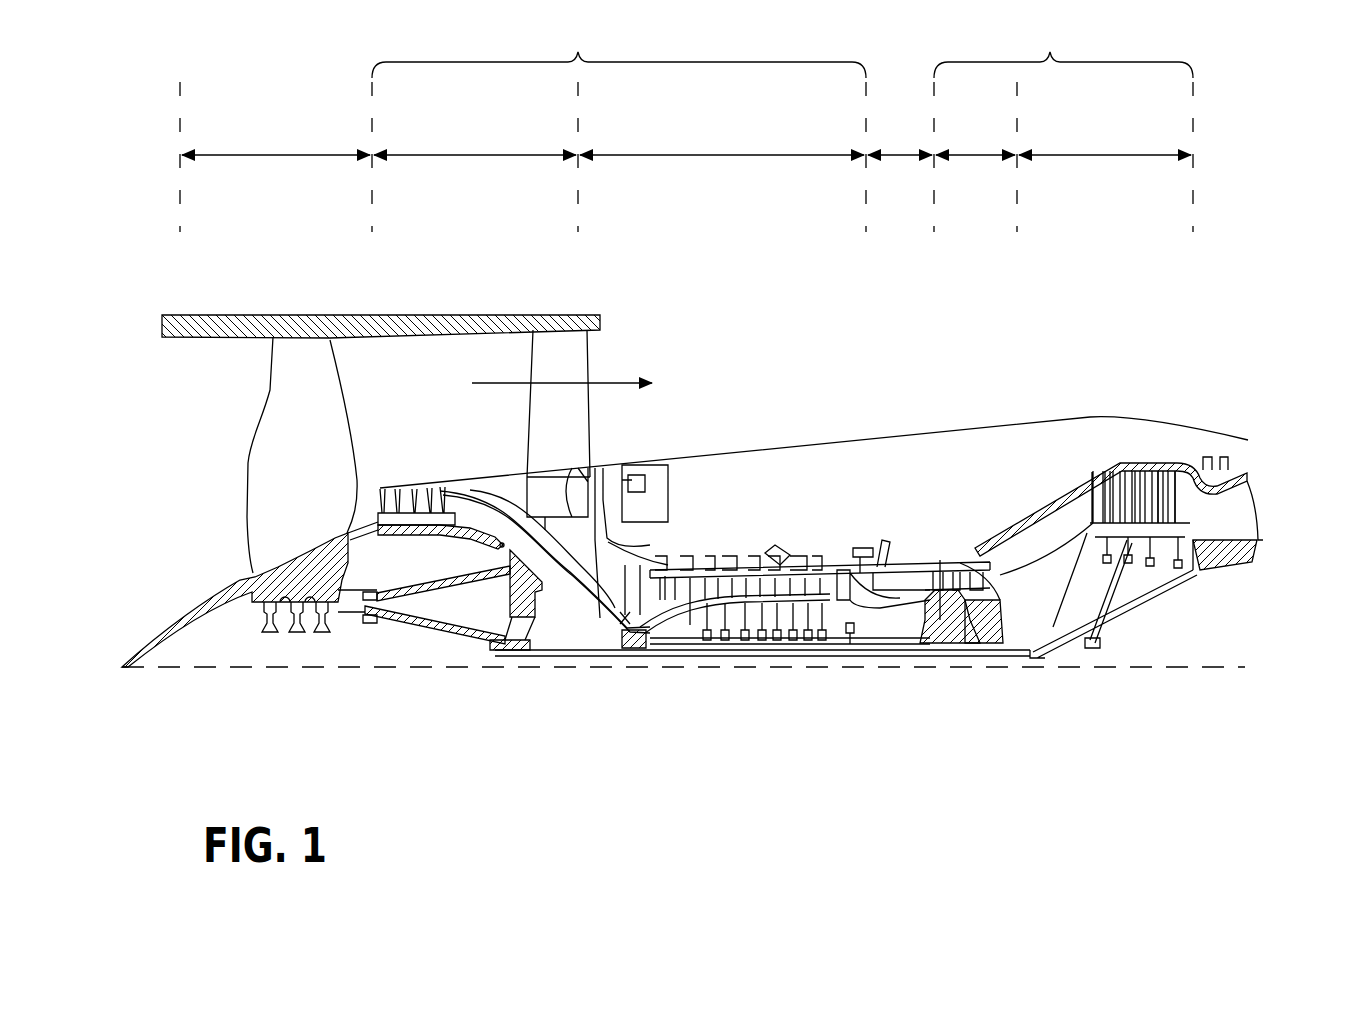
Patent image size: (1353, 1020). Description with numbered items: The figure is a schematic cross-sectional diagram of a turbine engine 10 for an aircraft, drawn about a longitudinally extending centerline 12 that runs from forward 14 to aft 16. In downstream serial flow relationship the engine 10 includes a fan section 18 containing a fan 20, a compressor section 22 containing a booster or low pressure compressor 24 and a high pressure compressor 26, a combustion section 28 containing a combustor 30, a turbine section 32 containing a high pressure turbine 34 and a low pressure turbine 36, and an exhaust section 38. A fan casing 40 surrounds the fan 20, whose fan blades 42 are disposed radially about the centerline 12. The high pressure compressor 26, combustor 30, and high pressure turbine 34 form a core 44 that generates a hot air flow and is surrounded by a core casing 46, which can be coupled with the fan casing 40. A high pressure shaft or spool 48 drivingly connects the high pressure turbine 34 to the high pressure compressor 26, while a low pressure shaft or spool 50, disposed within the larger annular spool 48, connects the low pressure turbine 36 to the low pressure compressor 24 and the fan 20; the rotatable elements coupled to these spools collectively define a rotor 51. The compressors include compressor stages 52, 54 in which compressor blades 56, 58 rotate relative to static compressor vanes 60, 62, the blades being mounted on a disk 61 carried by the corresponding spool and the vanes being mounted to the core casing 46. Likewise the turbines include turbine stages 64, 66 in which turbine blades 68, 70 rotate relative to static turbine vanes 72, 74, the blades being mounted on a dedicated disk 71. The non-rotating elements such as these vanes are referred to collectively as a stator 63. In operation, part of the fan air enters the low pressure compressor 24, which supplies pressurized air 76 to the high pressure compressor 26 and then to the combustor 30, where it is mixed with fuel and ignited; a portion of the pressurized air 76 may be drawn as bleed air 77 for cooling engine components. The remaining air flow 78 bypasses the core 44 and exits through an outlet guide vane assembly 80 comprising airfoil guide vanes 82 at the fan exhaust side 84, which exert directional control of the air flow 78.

The turbine engine 10 is at (890, 308).
The centerline 12 is at (273, 668).
The forward 14 is at (128, 444).
The aft 16 is at (1278, 528).
The fan section 18 is at (276, 141).
The fan 20 is at (214, 516).
The compressor section 22 is at (619, 51).
The low pressure compressor 24 is at (475, 141).
The high pressure compressor 26 is at (722, 141).
The combustion section 28 is at (900, 137).
The combustor 30 is at (900, 580).
The turbine section 32 is at (1063, 51).
The high pressure turbine 34 is at (975, 141).
The low pressure turbine 36 is at (1105, 141).
The exhaust section 38 is at (1270, 482).
The fan casing 40 is at (408, 315).
The fan blades 42 is at (328, 392).
The core 44 is at (845, 480).
The core casing 46 is at (1070, 488).
The HP shaft or spool 48 is at (877, 650).
The LP shaft or spool 50 is at (512, 657).
The rotor 51 is at (758, 660).
The compressor stage 52 is at (370, 430).
The compressor stage 54 is at (708, 470).
The compressor blades 56 is at (400, 490).
The compressor blades 58 is at (665, 585).
The static compressor vanes 60 is at (382, 490).
The disk 61 is at (400, 537).
The static compressor vanes 62 is at (672, 560).
The stator 63 is at (1128, 462).
The turbine stage 64 is at (998, 502).
The turbine stage 66 is at (1176, 364).
The turbine blades 68 is at (955, 572).
The turbine blades 70 is at (1178, 475).
The disk 71 is at (950, 641).
The static turbine vanes 72 is at (925, 572).
The static turbine vanes 74 is at (1163, 470).
The pressurized air 76 is at (580, 582).
The bleed air 77 is at (740, 555).
The air flow 78 is at (498, 383).
The outlet guide vane assembly 80 is at (602, 433).
The airfoil guide vanes 82 is at (543, 418).
The fan exhaust side 84 is at (628, 346).